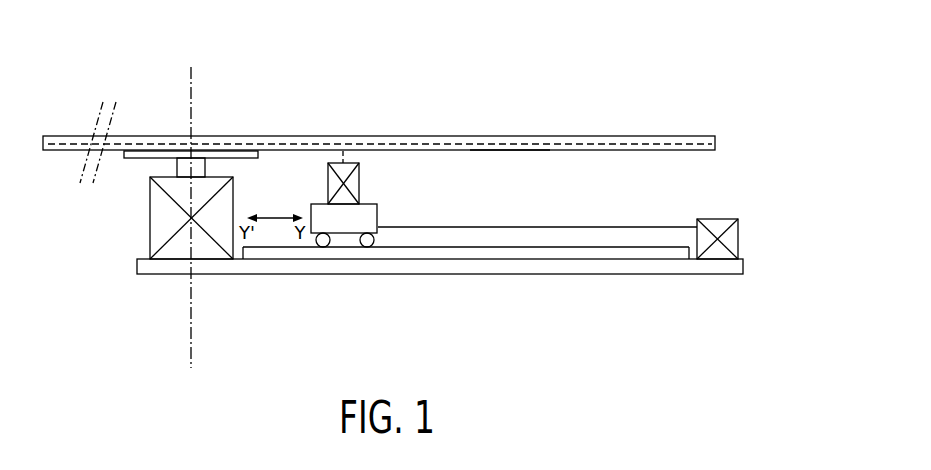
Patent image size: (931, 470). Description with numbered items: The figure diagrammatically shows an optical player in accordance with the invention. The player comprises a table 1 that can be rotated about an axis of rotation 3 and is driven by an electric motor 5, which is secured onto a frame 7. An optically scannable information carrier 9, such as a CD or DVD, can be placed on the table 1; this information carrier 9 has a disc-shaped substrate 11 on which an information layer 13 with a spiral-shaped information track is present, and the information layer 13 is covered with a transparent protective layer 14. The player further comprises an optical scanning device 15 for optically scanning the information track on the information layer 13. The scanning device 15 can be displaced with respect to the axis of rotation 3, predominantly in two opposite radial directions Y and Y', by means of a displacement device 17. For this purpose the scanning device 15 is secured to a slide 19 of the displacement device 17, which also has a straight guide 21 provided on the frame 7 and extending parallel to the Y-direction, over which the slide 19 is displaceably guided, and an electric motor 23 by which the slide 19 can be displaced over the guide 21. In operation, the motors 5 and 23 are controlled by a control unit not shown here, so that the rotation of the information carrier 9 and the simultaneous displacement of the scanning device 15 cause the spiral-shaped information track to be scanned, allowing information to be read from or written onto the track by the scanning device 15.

The table 1 is at (148, 155).
The axis of rotation 3 is at (192, 82).
The electric motor 5 is at (160, 220).
The frame 7 is at (457, 266).
The optically scannable information carrier 9 is at (576, 86).
The disc-shaped substrate 11 is at (658, 140).
The information layer 13 is at (467, 136).
The transparent protective layer 14 is at (512, 150).
The optical scanning device 15 is at (356, 181).
The displacement device 17 is at (580, 216).
The slide 19 is at (370, 212).
The straight guide 21 is at (555, 263).
The electric motor 23 is at (718, 226).